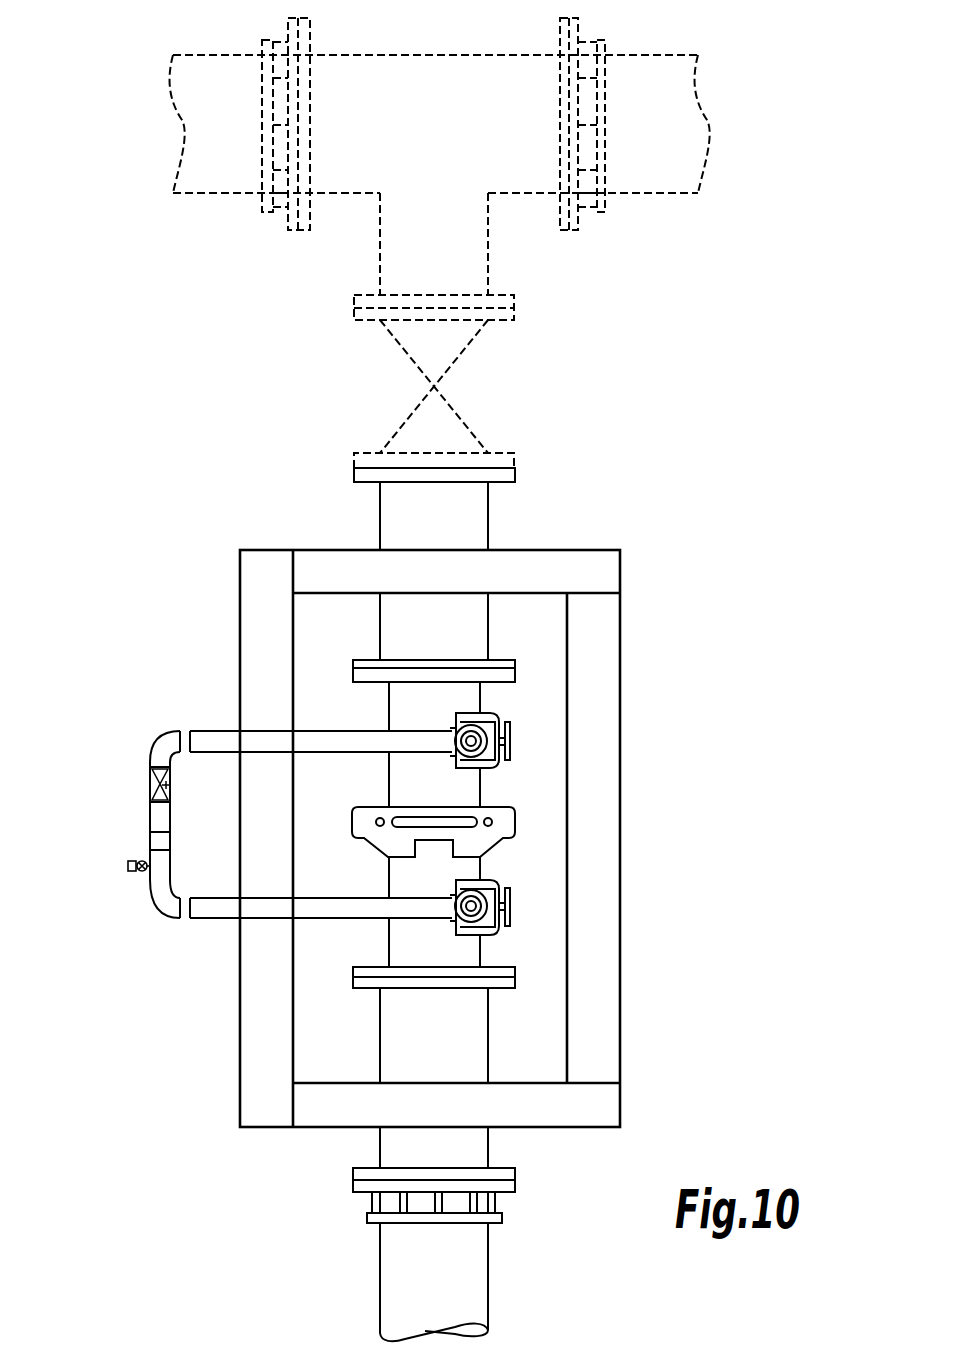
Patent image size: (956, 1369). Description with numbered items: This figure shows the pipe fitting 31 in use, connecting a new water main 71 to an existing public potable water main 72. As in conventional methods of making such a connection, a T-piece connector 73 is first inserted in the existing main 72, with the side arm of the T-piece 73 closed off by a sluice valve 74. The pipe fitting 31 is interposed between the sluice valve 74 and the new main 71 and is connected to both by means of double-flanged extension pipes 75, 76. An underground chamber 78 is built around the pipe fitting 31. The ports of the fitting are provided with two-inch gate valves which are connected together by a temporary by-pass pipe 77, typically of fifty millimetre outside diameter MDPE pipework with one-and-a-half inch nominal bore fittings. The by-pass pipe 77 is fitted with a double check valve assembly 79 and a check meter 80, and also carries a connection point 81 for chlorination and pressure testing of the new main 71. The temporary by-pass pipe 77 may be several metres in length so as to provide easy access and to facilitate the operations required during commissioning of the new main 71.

The pipe fitting 31 is at (385, 788).
The new water main 71 is at (403, 1293).
The existing public potable water main 72 is at (197, 110).
The T-piece connector 73 is at (396, 78).
The sluice valve 74 is at (473, 400).
The double-flanged extension pipe 75 is at (467, 628).
The double-flanged extension pipe 76 is at (467, 1045).
The temporary by-pass pipe 77 is at (207, 729).
The underground chamber 78 is at (597, 868).
The double check valve assembly 79 is at (150, 787).
The check meter 80 is at (150, 843).
The connection point 81 is at (128, 867).